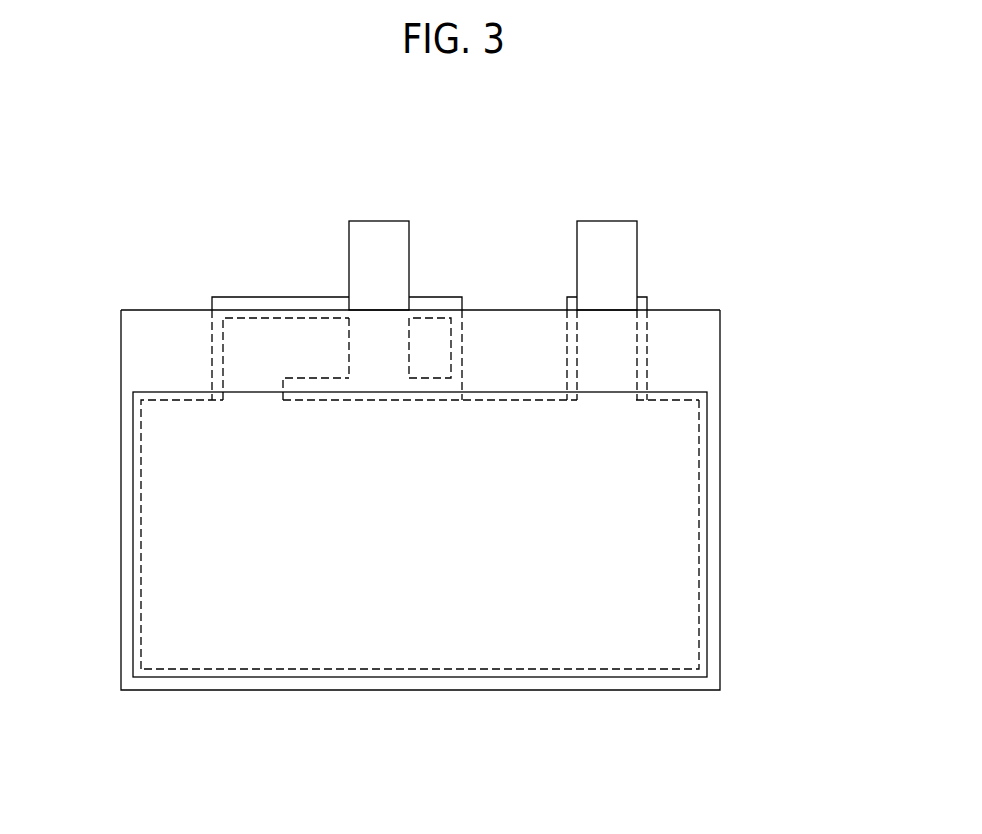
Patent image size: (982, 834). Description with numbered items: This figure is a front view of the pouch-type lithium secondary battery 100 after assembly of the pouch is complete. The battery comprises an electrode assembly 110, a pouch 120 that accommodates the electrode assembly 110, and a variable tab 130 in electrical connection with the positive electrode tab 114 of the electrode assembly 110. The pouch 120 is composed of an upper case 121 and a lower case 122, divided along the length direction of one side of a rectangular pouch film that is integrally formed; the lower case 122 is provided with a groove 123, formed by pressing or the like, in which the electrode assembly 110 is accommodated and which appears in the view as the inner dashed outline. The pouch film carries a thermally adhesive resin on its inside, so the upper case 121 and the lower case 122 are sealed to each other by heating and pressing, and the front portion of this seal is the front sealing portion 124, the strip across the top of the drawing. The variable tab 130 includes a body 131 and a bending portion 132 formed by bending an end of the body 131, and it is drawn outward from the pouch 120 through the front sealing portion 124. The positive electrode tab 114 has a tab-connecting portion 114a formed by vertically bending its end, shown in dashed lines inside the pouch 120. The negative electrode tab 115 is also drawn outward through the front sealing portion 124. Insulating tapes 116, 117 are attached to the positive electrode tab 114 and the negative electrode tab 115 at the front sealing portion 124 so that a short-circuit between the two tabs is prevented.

The pouch-type lithium secondary battery 100 is at (137, 172).
The electrode assembly 110 is at (142, 524).
The positive electrode tab 114 is at (220, 374).
The tab-connecting portion 114a is at (281, 337).
The negative electrode tab 115 is at (610, 230).
The insulating tape 116 is at (446, 297).
The insulating tape 117 is at (644, 293).
The pouch 120 is at (819, 494).
The upper case 121 is at (720, 497).
The lower case 122 is at (706, 545).
The groove 123 is at (699, 590).
The front sealing portion 124 is at (522, 330).
The variable tab 130 is at (263, 192).
The body 131 is at (349, 243).
The bending portion 132 is at (363, 339).